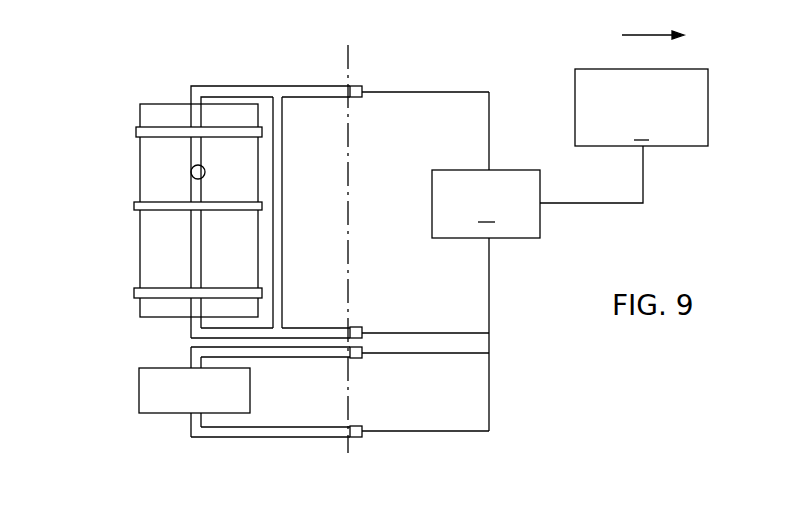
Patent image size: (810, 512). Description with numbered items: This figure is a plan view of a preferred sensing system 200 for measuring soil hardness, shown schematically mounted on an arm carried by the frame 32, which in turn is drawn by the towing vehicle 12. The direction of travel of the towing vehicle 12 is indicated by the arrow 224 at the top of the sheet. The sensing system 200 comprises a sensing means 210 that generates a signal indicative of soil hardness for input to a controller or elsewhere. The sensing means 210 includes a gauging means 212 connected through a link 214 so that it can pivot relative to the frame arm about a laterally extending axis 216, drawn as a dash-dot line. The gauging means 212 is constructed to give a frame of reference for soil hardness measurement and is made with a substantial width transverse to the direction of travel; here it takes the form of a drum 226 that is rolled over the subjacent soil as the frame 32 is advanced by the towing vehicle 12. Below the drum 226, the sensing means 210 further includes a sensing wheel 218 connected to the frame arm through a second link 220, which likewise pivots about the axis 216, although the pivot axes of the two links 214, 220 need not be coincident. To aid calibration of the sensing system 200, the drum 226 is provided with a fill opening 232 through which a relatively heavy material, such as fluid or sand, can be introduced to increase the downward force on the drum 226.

The towing vehicle 12 is at (641, 107).
The frame 32 is at (537, 192).
The sensing system 200 is at (308, 170).
The sensing means 210 is at (274, 422).
The gauging means 212 is at (152, 210).
The link 214 is at (320, 86).
The axis 216 is at (348, 245).
The sensing wheel 218 is at (139, 395).
The link 220 is at (310, 432).
The arrow 224 is at (638, 34).
The drum 226 is at (140, 163).
The fill opening 232 is at (204, 177).